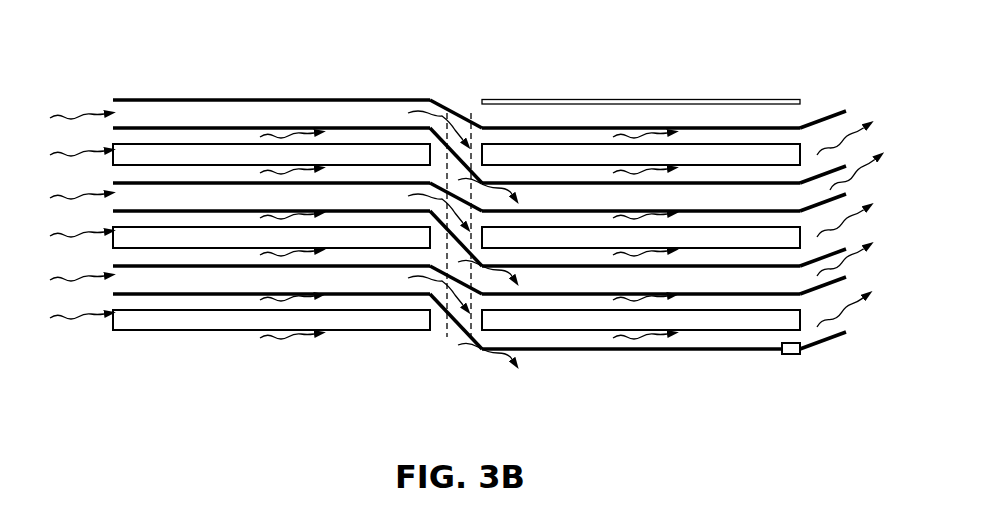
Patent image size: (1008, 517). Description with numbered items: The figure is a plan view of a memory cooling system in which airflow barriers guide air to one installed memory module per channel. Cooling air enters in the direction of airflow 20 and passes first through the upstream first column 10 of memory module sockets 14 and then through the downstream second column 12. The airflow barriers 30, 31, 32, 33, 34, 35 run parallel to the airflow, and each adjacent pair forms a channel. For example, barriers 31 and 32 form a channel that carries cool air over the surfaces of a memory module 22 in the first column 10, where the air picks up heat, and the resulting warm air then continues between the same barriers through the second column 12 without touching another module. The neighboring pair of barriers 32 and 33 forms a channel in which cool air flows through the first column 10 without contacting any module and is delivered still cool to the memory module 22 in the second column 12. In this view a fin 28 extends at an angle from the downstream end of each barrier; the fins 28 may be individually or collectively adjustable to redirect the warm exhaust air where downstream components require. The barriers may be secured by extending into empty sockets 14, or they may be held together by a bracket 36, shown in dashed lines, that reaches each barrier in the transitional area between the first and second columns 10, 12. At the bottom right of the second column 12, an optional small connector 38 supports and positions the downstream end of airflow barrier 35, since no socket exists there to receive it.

The first column 10 is at (224, 90).
The second column 12 is at (572, 90).
The memory module socket 14 is at (740, 99).
The direction of airflow 20 is at (80, 113).
The memory module 22 is at (456, 237).
The fin 28 is at (818, 118).
The airflow barrier 30 is at (363, 100).
The airflow barrier 31 is at (395, 128).
The airflow barrier 32 is at (443, 130).
The airflow barrier 33 is at (445, 262).
The airflow barrier 34 is at (465, 250).
The airflow barrier 35 is at (455, 335).
The bracket 36 is at (472, 142).
The small connector 38 is at (790, 355).